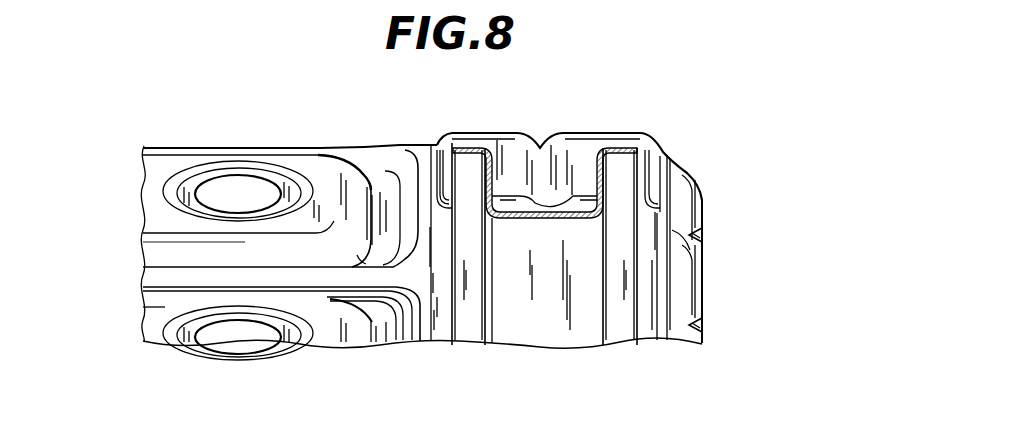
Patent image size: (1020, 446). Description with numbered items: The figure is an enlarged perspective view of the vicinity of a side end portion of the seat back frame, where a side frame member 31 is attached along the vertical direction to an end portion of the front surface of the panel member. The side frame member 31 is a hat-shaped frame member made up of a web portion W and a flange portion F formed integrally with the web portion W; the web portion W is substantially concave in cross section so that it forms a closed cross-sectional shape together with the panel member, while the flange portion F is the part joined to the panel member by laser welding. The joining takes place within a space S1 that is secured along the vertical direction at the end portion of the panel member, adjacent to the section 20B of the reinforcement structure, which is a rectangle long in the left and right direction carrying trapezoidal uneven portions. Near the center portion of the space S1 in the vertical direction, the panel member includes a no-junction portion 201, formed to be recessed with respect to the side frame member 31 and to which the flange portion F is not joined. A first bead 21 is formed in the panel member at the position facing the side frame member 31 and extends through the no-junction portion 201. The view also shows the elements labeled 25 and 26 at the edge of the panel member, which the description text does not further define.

The section of the reinforcement structure 20B is at (320, 172).
The first bead 21 is at (540, 157).
The no-junction portion 201 is at (590, 147).
The flange portion F is at (467, 338).
The web portion W is at (510, 338).
The side frame member 31 is at (543, 338).
The space S1 is at (650, 333).
The lip portion 25 is at (703, 273).
The notch 26 is at (697, 233).